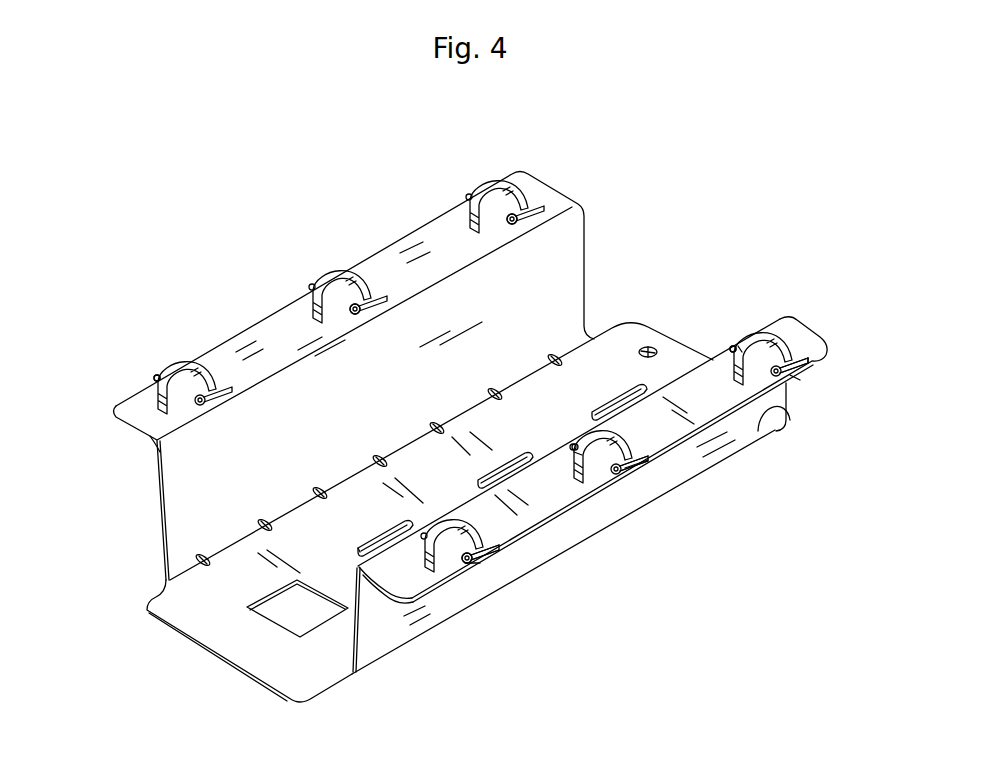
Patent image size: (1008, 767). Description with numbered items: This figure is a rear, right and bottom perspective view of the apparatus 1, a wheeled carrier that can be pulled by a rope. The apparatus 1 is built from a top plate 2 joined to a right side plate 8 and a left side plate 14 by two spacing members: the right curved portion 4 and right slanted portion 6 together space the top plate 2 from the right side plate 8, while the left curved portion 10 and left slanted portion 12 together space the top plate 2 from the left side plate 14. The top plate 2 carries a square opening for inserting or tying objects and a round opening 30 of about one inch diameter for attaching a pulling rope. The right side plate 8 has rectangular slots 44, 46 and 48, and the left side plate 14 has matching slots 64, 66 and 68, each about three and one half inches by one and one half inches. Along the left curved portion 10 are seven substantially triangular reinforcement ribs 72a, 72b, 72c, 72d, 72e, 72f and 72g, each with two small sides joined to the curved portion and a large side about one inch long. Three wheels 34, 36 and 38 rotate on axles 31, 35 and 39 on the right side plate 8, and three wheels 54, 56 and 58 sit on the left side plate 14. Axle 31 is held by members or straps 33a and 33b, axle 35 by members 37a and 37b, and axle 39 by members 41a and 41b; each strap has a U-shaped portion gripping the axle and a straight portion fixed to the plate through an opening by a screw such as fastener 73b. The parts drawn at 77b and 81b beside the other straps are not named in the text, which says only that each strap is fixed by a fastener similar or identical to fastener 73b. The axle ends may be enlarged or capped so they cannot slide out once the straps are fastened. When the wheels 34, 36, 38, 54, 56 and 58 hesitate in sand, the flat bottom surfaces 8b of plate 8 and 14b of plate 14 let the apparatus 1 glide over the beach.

The apparatus 1 is at (383, 237).
The top plate 2 is at (233, 637).
The right curved portion 4 is at (357, 630).
The right slanted portion 6 is at (363, 571).
The right side plate 8 is at (410, 577).
The flat bottom surface 8b is at (388, 571).
The left curved portion 10 is at (164, 583).
The left slanted portion 12 is at (177, 489).
The left side plate 14 is at (140, 421).
The flat bottom surface 14b is at (158, 432).
The opening 30 is at (650, 350).
The axle 31 is at (733, 350).
The member or strap 33a is at (820, 368).
The member 33b is at (740, 350).
The wheel 34 is at (760, 343).
The axle 35 is at (577, 441).
The wheel 36 is at (597, 442).
The member 37a is at (636, 462).
The member 37b is at (572, 443).
The wheel 38 is at (445, 520).
The axle 39 is at (410, 528).
The member 41a is at (473, 560).
The member 41b is at (377, 547).
The slot 44 is at (728, 379).
The slot 46 is at (573, 467).
The slot 48 is at (470, 548).
The wheel 54 is at (176, 380).
The wheel 56 is at (336, 289).
The wheel 58 is at (509, 200).
The slot 64 is at (150, 407).
The slot 66 is at (312, 324).
The slot 68 is at (469, 231).
The rib 72a is at (203, 553).
The rib 72b is at (265, 519).
The rib 72c is at (320, 488).
The rib 72d is at (380, 457).
The rib 72e is at (437, 424).
The rib 72f is at (495, 389).
The rib 72g is at (555, 353).
The fastener 73b is at (793, 360).
The rod 77b is at (637, 455).
The rod 81b is at (497, 549).